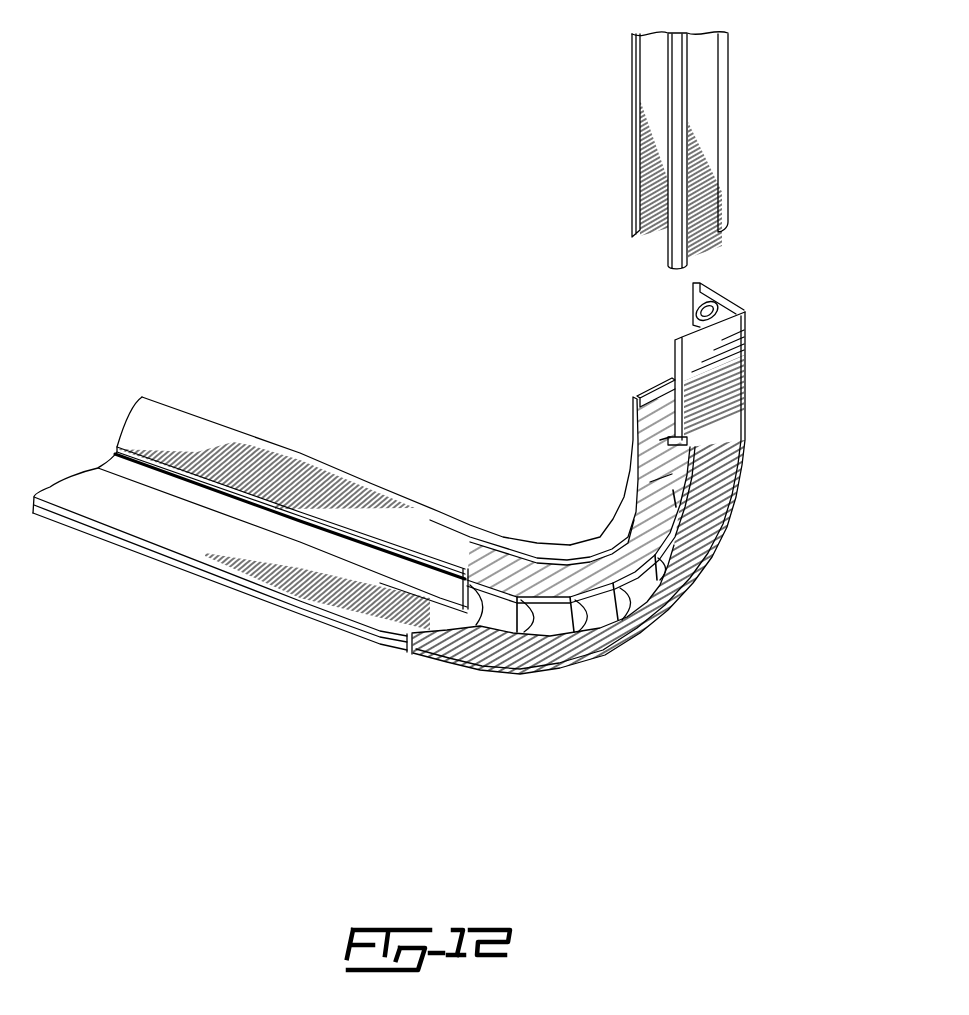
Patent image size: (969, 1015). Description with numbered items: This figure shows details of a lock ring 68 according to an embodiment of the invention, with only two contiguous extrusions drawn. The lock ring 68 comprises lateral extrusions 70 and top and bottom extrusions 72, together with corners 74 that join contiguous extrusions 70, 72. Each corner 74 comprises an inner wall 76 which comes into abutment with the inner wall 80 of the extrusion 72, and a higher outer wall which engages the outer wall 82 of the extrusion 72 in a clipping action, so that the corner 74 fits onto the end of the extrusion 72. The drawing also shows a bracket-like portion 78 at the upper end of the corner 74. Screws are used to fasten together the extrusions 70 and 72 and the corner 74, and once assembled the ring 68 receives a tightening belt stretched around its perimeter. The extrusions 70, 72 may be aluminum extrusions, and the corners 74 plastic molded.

The lock ring 68 is at (413, 240).
The lateral extrusion 70 is at (303, 618).
The top and bottom extrusion 72 is at (728, 149).
The corner 74 is at (730, 510).
The inner wall 76 is at (650, 392).
The mounting bracket 78 is at (728, 296).
The inner wall of the extrusion 80 is at (634, 232).
The outer wall of the extrusion 82 is at (710, 202).